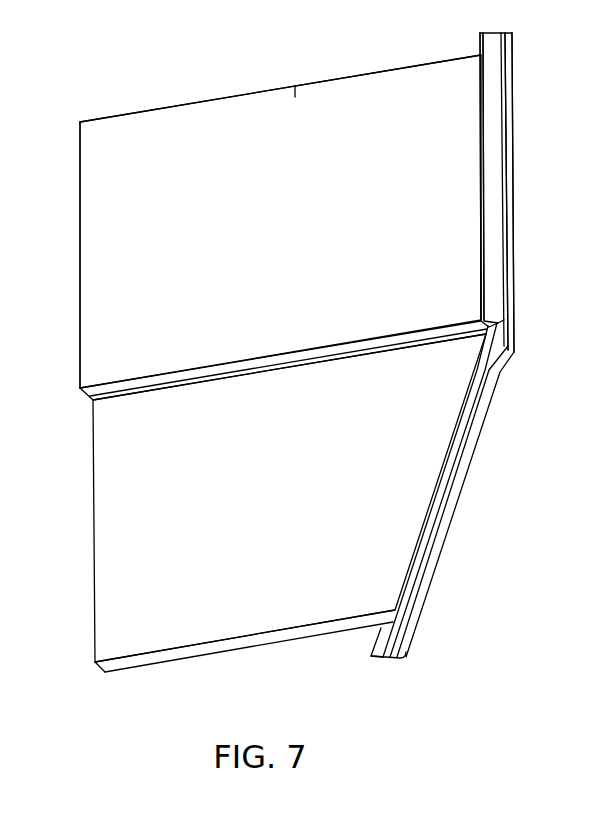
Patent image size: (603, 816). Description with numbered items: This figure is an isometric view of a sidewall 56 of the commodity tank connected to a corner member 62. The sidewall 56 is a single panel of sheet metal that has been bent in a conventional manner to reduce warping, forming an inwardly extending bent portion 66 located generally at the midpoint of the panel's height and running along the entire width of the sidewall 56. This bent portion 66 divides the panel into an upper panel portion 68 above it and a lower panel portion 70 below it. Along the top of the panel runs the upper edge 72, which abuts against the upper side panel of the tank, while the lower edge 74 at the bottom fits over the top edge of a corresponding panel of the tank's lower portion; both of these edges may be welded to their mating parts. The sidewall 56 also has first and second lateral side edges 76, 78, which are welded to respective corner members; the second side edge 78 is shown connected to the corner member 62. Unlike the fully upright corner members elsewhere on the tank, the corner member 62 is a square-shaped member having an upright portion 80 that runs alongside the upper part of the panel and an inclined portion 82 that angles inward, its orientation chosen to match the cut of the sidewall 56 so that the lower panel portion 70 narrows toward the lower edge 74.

The sidewall 56 is at (304, 355).
The corner member 62 is at (517, 91).
The bent portion 66 is at (407, 342).
The upper panel portion 68 is at (455, 221).
The lower panel portion 70 is at (390, 521).
The upper edge 72 is at (149, 111).
The lower edge 74 is at (249, 642).
The first side edge 76 is at (79, 262).
The second side edge 78 is at (483, 145).
The upright portion 80 is at (493, 278).
The inclined portion 82 is at (467, 422).